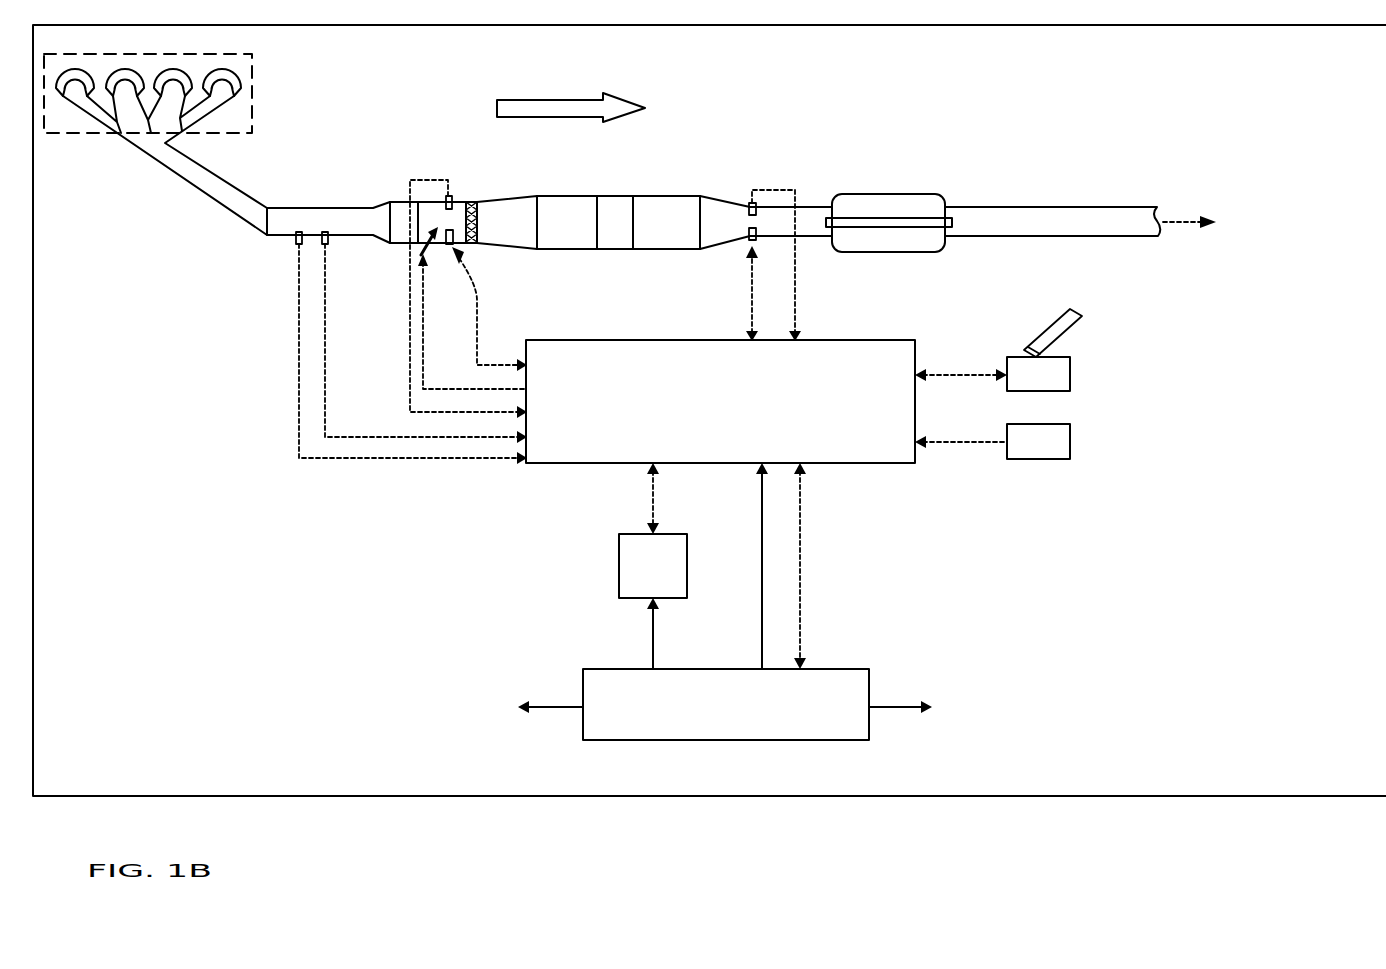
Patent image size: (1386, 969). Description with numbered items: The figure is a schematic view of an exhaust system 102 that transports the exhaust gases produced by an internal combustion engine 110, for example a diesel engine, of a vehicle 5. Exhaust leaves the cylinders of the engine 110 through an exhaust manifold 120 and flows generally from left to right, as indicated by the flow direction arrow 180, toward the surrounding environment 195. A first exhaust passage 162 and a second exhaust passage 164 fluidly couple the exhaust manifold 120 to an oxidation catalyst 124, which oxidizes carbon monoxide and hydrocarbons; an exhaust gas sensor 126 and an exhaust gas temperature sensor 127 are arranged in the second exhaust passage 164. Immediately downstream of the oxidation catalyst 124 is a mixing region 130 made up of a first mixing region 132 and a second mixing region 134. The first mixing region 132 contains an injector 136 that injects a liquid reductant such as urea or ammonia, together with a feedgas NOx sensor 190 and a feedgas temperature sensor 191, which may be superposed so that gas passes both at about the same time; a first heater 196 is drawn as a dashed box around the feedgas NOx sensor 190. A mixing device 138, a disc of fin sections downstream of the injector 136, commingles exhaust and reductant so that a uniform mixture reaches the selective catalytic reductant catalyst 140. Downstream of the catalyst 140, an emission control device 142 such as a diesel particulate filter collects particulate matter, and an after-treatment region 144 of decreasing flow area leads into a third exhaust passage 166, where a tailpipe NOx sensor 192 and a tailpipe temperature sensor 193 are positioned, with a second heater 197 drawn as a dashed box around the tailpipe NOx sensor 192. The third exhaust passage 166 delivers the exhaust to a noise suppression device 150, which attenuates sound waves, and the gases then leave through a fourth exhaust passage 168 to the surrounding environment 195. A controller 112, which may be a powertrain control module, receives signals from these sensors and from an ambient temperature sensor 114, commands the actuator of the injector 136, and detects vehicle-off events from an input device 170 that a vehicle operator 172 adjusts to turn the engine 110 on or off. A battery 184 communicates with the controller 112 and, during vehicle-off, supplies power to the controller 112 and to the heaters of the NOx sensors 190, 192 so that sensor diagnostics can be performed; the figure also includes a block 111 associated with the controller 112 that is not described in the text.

The vehicle 5 is at (1374, 73).
The exhaust system 102 is at (142, 219).
The internal combustion engine 110 is at (252, 73).
The memory 111 is at (667, 577).
The controller 112 is at (736, 413).
The ambient temperature sensor 114 is at (1052, 451).
The exhaust manifold 120 is at (118, 133).
The oxidation catalyst 124 is at (400, 244).
The exhaust gas sensor 126 is at (296, 243).
The exhaust gas temperature sensor 127 is at (328, 243).
The mixing region 130 is at (532, 166).
The first mixing region 132 is at (470, 202).
The second mixing region 134 is at (522, 197).
The injector 136 is at (428, 254).
The mixing device 138 is at (478, 215).
The selective catalytic reductant catalyst 140 is at (578, 196).
The emission control device 142 is at (677, 251).
The after-treatment region 144 is at (727, 251).
The noise suppression device 150 is at (888, 194).
The first exhaust passage 162 is at (203, 200).
The second exhaust passage 164 is at (315, 208).
The third exhaust passage 166 is at (808, 206).
The fourth exhaust passage 168 is at (1043, 206).
The input device 170 is at (1052, 384).
The vehicle operator 172 is at (1067, 315).
The flow direction arrow 180 is at (543, 100).
The battery 184 is at (740, 714).
The feedgas NOx sensor 190 is at (456, 247).
The feedgas temperature sensor 191 is at (452, 196).
The tailpipe NOx sensor 192 is at (757, 242).
The tailpipe temperature sensor 193 is at (750, 202).
The surrounding environment 195 is at (1207, 223).
The first heater 196 is at (471, 299).
The second heater 197 is at (758, 221).